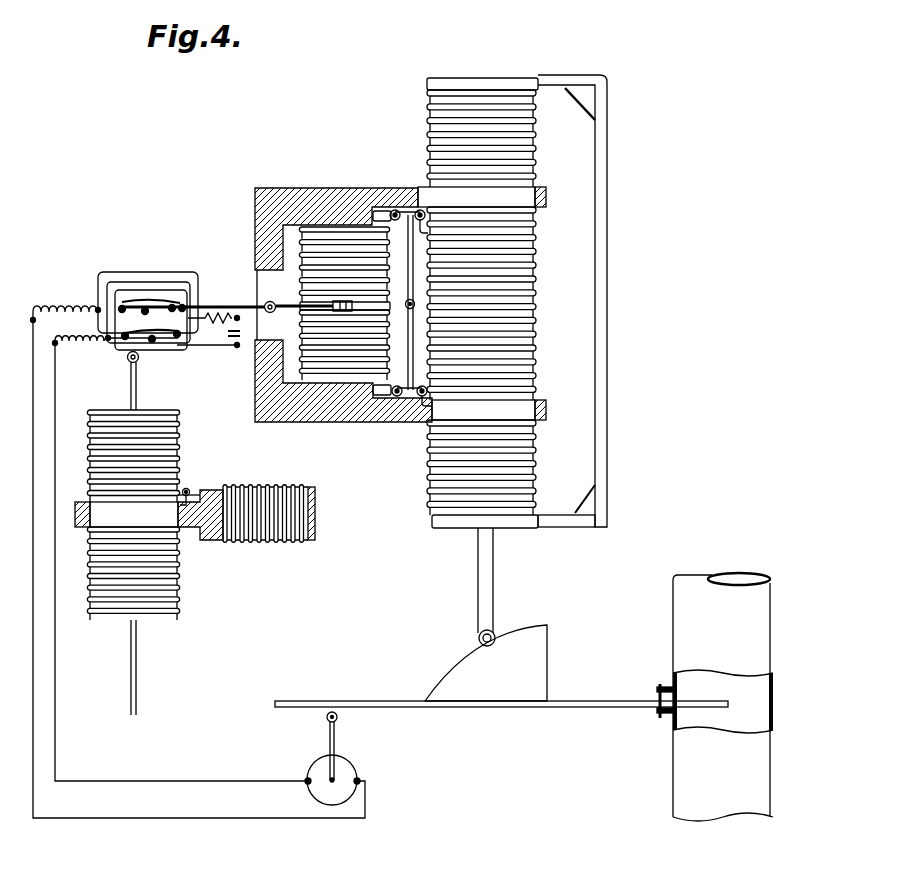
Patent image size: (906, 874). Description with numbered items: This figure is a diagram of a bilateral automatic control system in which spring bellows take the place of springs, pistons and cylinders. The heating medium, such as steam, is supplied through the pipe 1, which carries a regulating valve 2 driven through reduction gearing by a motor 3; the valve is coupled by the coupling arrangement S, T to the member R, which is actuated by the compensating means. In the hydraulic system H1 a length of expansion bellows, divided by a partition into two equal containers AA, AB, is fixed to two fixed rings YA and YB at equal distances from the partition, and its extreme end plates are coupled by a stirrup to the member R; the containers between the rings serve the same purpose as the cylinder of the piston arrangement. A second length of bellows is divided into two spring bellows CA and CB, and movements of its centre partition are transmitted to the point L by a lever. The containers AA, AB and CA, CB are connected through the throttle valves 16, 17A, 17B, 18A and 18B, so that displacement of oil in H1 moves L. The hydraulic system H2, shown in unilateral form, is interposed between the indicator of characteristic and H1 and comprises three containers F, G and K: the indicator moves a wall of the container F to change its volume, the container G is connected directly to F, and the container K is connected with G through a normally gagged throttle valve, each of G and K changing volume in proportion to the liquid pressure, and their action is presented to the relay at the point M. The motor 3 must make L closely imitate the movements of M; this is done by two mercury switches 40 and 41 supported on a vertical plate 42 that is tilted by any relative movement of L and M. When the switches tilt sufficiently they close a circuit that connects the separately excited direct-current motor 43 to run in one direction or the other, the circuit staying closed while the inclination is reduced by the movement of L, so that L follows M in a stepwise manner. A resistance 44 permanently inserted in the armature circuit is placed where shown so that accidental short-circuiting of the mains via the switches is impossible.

The pipe 1 is at (678, 622).
The regulating valve 2 is at (703, 707).
The motor 3 is at (340, 755).
The throttle valve 16 is at (408, 302).
The throttle valve 17A is at (418, 210).
The throttle valve 17B is at (421, 397).
The throttle valve 18A is at (392, 210).
The throttle valve 18B is at (395, 396).
The mercury switch 40 is at (157, 298).
The mercury switch 41 is at (132, 332).
The vertical plate 42 is at (170, 340).
The D. C. motor 43 is at (312, 795).
The resistance 44 is at (212, 322).
The container AA is at (537, 165).
The container AB is at (537, 480).
The fixed ring YA is at (546, 200).
The fixed ring YB is at (546, 410).
The spring bellows CA is at (300, 265).
The spring bellows CB is at (300, 357).
The hydraulic system H1 is at (431, 301).
The hydraulic system H2 is at (149, 548).
The lever L is at (215, 306).
The member M is at (128, 362).
The container G is at (177, 457).
The container F is at (177, 552).
The container K is at (258, 537).
The member R is at (495, 612).
The coupling arrangement T is at (522, 642).
The coupling arrangement S is at (520, 708).